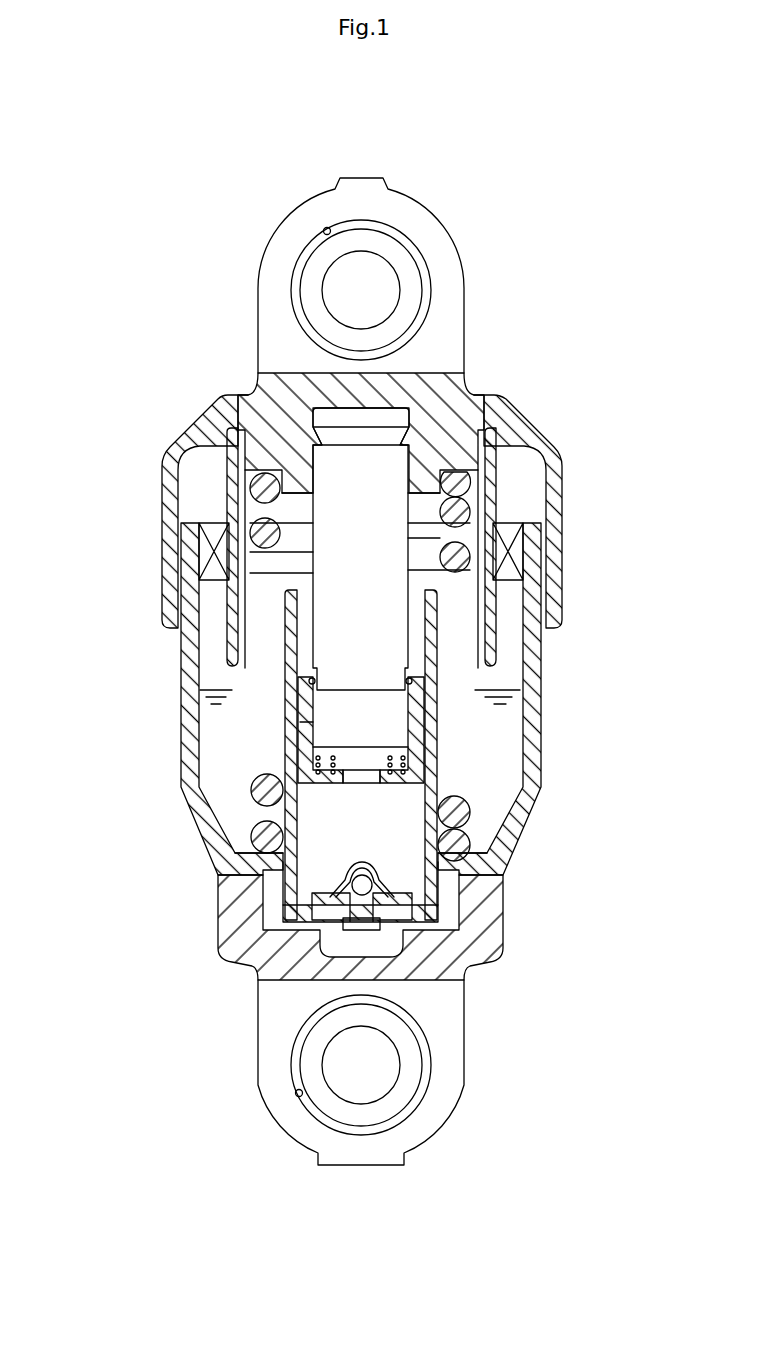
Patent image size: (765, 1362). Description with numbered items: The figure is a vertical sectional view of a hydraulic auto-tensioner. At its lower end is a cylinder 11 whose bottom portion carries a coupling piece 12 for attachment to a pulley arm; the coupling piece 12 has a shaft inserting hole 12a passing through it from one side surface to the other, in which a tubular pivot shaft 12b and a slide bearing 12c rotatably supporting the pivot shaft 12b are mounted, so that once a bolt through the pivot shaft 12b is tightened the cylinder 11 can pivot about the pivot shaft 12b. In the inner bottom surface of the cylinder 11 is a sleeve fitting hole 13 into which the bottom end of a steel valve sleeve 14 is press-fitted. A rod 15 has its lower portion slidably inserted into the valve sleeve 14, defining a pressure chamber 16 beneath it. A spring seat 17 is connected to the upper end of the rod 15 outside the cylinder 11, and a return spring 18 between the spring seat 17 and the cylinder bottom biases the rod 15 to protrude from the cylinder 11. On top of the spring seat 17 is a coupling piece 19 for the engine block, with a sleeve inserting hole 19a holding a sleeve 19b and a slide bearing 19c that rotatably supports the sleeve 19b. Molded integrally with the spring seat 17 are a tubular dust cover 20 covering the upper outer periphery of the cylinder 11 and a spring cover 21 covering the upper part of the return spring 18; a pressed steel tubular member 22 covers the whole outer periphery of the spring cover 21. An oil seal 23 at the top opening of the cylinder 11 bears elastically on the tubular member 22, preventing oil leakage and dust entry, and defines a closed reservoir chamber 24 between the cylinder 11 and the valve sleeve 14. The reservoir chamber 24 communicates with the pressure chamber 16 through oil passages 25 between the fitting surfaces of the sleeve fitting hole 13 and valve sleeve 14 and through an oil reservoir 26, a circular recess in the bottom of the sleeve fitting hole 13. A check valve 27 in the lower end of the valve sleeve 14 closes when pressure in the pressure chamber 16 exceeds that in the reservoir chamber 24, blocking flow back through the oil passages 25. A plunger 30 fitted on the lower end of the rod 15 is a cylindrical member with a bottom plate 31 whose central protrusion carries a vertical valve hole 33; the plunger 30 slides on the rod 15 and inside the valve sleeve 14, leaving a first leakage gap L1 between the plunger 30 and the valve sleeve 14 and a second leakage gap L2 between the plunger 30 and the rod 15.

The coupling piece 19 is at (279, 245).
The sleeve inserting hole 19a is at (324, 228).
The sleeve 19b is at (387, 247).
The slide bearing 19c is at (420, 256).
The spring seat 17 is at (275, 440).
The return spring 18 is at (310, 513).
The rod 15 is at (330, 573).
The dust cover 20 is at (563, 480).
The tubular member 22 is at (470, 498).
The oil seal 23 is at (518, 551).
The spring cover 21 is at (484, 607).
The reservoir chamber 24 is at (503, 668).
The first leakage gap L1 is at (295, 697).
The second leakage gap L2 is at (295, 722).
The cylinder 11 is at (183, 742).
The valve sleeve 14 is at (290, 757).
The plunger 30 is at (424, 720).
The bottom plate 31 is at (380, 777).
The pressure chamber 16 is at (313, 817).
The valve hole 33 is at (362, 778).
The check valve 27 is at (380, 878).
The sleeve fitting hole 13 is at (283, 902).
The oil passages 25 is at (450, 907).
The oil reservoir 26 is at (390, 947).
The coupling piece 12 is at (268, 1075).
The shaft inserting hole 12a is at (298, 1095).
The pivot shaft 12b is at (333, 1108).
The slide bearing 12c is at (383, 1128).